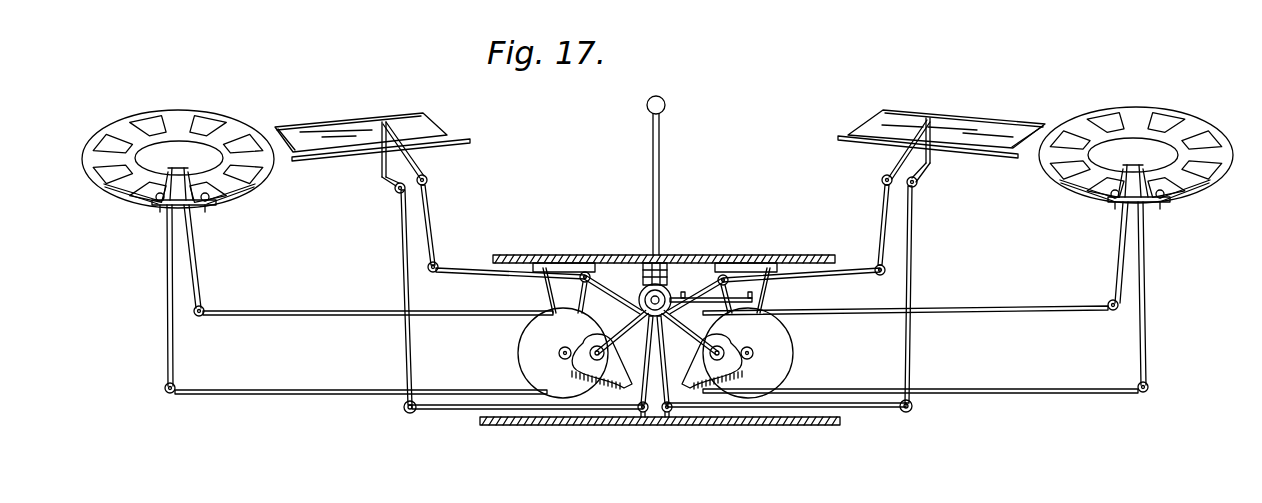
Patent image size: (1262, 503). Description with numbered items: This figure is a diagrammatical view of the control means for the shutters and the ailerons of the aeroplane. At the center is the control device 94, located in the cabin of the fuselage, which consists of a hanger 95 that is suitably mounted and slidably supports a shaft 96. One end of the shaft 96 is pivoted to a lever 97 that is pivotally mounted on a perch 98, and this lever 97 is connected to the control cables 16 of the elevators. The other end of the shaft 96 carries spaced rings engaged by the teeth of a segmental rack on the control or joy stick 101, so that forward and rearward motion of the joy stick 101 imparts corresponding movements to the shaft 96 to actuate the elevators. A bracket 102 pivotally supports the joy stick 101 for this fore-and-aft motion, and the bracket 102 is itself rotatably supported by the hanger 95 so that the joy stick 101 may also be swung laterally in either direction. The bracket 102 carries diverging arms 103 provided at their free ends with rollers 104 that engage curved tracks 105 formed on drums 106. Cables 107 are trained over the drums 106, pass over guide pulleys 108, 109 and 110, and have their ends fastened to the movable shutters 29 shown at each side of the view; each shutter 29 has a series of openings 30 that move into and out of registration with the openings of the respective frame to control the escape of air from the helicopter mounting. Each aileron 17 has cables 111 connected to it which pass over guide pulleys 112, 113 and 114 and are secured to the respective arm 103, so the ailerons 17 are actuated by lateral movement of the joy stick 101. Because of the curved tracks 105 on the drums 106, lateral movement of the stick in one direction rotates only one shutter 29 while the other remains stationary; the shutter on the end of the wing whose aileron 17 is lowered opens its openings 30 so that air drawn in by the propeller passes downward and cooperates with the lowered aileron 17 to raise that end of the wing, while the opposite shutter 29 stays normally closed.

The control cables 16 is at (750, 295).
The ailerons 17 is at (332, 125).
The shutter 29 is at (230, 123).
The openings 30 is at (155, 128).
The control device 94 is at (663, 178).
The hanger 95 is at (667, 258).
The shaft 96 is at (627, 305).
The lever 97 is at (762, 301).
The perch 98 is at (703, 367).
The joy stick 101 is at (650, 145).
The bracket 102 is at (635, 275).
The diverging arms 103 is at (611, 440).
The rollers 104 is at (763, 350).
The curved tracks 105 is at (603, 367).
The drums 106 is at (530, 348).
The cables 107 is at (313, 308).
The guide pulley 108 is at (1150, 395).
The guide pulley 109 is at (1140, 165).
The guide pulley 110 is at (1162, 207).
The cables 111 is at (468, 270).
The guide pulley 112 is at (917, 185).
The guide pulley 113 is at (876, 265).
The guide pulley 114 is at (743, 262).